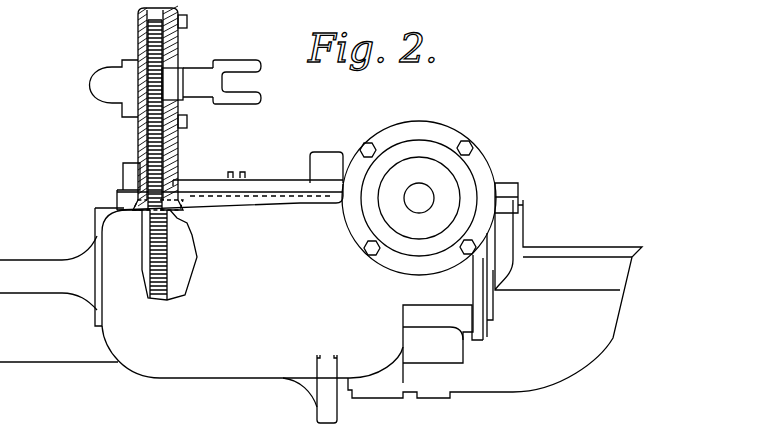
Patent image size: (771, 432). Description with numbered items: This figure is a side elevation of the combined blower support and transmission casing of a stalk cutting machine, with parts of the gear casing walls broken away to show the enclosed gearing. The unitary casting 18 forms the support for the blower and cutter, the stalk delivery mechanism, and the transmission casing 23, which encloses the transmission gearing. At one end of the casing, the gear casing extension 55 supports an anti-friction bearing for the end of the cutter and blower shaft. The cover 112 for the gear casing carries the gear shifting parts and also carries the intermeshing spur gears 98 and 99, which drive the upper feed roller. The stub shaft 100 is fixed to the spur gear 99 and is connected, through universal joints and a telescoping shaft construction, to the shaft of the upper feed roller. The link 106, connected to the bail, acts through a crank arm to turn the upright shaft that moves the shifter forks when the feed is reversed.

The unitary casting 18 is at (240, 380).
The transmission casing 23 is at (321, 280).
The gear casing extension 55 is at (483, 170).
The spur gear 98 is at (140, 145).
The spur gear 99 is at (138, 33).
The stub shaft 100 is at (203, 70).
The link 106 is at (325, 158).
The cover 112 is at (267, 197).